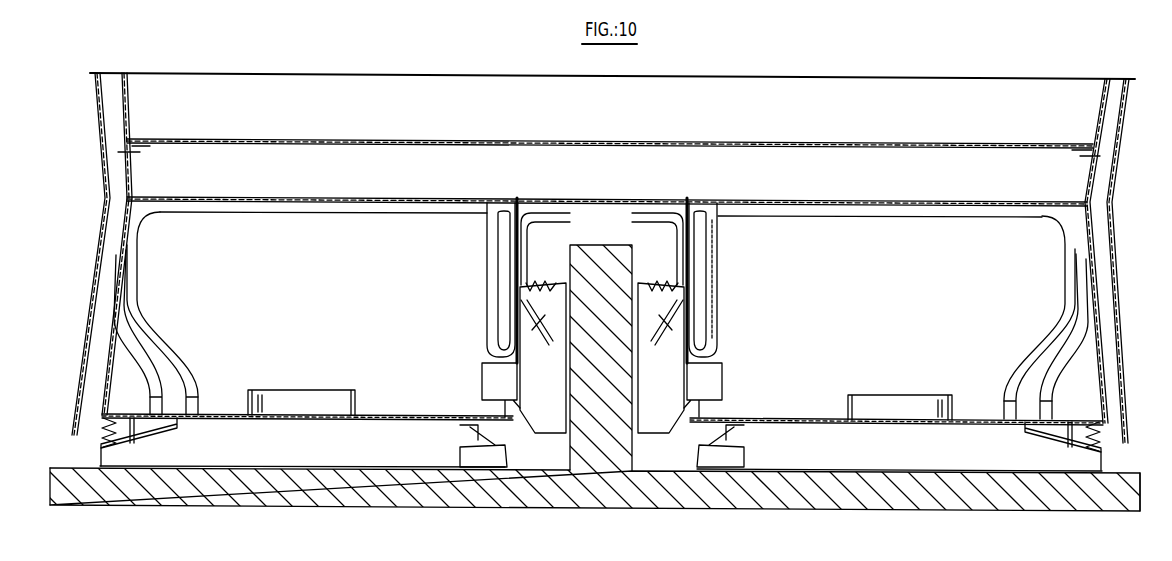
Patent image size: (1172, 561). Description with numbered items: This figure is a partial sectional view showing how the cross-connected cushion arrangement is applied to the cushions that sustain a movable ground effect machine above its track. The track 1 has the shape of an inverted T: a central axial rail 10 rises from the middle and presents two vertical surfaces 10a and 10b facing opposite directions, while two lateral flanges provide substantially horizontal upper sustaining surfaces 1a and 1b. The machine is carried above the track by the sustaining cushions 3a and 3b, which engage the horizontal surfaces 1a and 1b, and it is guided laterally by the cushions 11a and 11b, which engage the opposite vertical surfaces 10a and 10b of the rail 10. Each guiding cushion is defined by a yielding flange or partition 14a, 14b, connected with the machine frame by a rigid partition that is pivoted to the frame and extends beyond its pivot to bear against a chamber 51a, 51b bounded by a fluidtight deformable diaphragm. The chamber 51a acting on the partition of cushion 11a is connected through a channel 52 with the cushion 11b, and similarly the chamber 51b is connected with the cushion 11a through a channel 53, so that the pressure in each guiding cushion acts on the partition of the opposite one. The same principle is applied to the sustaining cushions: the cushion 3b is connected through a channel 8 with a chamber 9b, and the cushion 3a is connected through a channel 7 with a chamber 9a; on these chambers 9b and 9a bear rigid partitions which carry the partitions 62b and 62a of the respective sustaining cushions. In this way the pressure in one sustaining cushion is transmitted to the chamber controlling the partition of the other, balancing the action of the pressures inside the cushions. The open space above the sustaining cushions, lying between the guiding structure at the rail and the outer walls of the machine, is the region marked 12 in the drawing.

The track 1 is at (613, 509).
The upper sustaining surface 1a is at (1133, 473).
The upper sustaining surface 1b is at (58, 468).
The sustaining cushion 3a is at (944, 458).
The sustaining cushion 3b is at (336, 447).
The channel 7 is at (172, 362).
The channel 8 is at (128, 340).
The chamber 9a is at (1035, 433).
The chamber 9b is at (163, 433).
The axial rail 10 is at (600, 255).
The vertical surface 10a is at (636, 252).
The vertical surface 10b is at (568, 252).
The cushion 11a is at (678, 385).
The cushion 11b is at (568, 385).
The chamber 12 is at (347, 323).
The yielding partition 14a is at (648, 277).
The yielding partition 14b is at (548, 276).
The chamber 51a is at (661, 358).
The chamber 51b is at (543, 358).
The channel 52 is at (695, 242).
The channel 53 is at (718, 262).
The partition 62a is at (695, 450).
The partition 62b is at (507, 450).